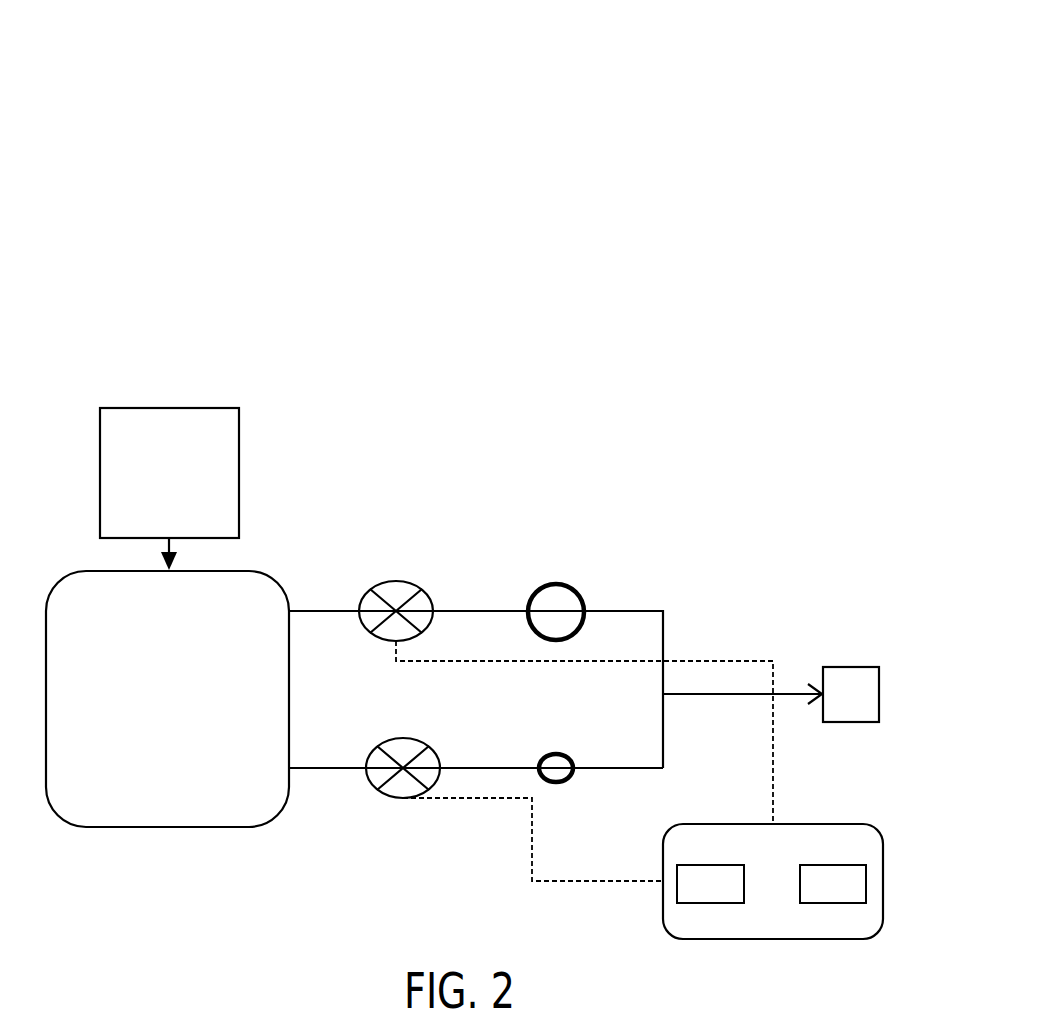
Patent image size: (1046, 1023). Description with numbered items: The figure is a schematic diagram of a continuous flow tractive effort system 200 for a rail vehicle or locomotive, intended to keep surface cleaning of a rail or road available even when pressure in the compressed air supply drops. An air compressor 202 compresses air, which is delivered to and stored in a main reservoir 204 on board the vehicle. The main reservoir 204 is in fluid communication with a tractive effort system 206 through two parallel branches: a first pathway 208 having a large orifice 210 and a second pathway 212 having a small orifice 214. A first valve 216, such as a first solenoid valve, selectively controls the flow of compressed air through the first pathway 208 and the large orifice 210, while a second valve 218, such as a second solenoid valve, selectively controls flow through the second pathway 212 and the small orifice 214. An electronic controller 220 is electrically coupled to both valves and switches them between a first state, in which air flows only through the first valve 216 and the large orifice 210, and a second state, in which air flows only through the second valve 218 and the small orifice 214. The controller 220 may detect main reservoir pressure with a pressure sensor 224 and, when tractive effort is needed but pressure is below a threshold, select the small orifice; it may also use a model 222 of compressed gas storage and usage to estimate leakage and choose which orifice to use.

The continuous flow tractive effort system 200 is at (893, 68).
The air compressor 202 is at (203, 408).
The main reservoir 204 is at (108, 571).
The tractive effort system 206 is at (855, 667).
The first pathway 208 is at (301, 609).
The large orifice 210 is at (565, 584).
The second pathway 212 is at (310, 766).
The small orifice 214 is at (561, 753).
The first valve 216 is at (409, 582).
The second valve 218 is at (405, 738).
The electronic controller 220 is at (680, 824).
The model 222 is at (710, 884).
The pressure sensor 224 is at (833, 884).